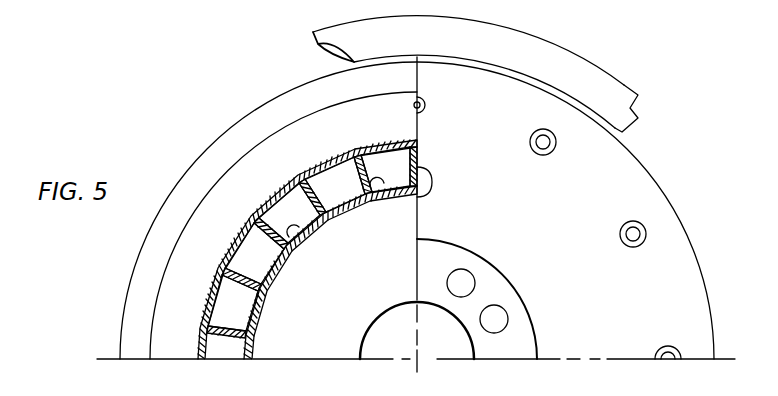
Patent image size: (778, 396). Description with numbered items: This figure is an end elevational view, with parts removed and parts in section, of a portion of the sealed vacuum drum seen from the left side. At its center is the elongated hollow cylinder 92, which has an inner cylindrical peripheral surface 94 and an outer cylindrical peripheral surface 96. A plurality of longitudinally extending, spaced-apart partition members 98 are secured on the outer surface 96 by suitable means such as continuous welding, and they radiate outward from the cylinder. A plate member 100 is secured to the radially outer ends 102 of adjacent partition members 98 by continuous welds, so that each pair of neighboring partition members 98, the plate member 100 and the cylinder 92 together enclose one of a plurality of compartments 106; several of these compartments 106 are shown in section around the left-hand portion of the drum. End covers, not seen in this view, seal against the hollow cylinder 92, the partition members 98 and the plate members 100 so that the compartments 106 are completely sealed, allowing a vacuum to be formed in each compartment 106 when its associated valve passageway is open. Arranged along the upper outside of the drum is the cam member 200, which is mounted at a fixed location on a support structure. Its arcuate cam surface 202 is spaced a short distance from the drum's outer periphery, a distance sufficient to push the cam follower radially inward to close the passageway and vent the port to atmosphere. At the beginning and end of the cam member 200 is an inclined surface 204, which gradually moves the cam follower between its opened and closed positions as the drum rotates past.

The elongated hollow cylinder 92 is at (340, 212).
The inner cylindrical peripheral surface 94 is at (275, 277).
The outer cylindrical peripheral surface 96 is at (238, 237).
The partition member 98 is at (310, 224).
The plate member 100 is at (240, 224).
The radially outer end 102 is at (295, 176).
The compartment 106 is at (235, 312).
The cam member 200 is at (519, 59).
The arcuate cam surface 202 is at (580, 108).
The inclined surface 204 is at (313, 45).